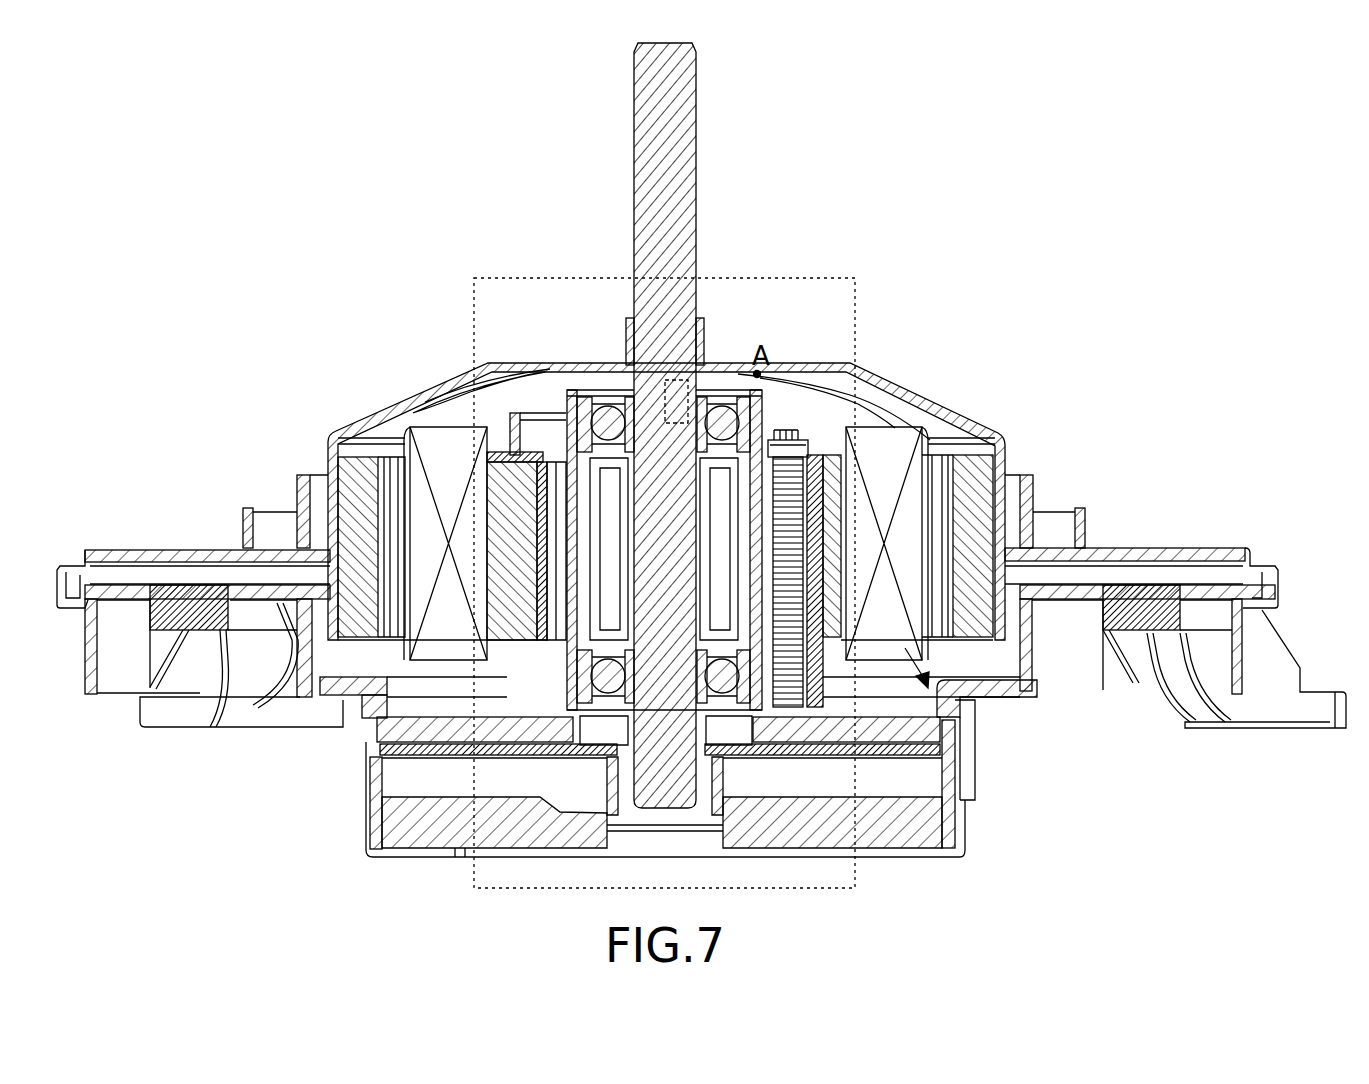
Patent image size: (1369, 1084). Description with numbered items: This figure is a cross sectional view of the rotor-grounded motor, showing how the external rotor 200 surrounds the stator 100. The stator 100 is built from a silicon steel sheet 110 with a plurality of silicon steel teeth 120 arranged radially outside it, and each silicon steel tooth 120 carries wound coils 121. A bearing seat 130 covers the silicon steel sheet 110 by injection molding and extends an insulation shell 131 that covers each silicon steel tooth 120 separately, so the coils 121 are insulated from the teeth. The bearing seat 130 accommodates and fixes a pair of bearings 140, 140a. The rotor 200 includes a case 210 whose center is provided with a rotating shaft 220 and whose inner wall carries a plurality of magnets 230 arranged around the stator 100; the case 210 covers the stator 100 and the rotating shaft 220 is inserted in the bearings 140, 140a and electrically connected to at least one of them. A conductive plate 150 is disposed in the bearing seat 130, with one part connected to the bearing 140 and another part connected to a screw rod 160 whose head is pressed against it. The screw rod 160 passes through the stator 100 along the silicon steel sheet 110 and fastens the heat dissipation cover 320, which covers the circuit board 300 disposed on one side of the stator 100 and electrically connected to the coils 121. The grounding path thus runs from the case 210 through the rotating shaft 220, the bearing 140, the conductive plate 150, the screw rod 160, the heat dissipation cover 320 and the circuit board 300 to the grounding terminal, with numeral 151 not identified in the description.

The stator 100 is at (950, 716).
The silicon steel sheet 110 is at (830, 510).
The silicon steel teeth 120 is at (934, 446).
The coils 121 is at (838, 425).
The bearing seat 130 is at (565, 398).
The insulation shell 131 is at (900, 428).
The bearing 140 is at (720, 415).
The bearing 140a is at (580, 670).
The conductive plate 150 is at (780, 470).
The rotor core top 151 is at (772, 450).
The screw rod 160 is at (1037, 525).
The rotor 200 is at (502, 364).
The case 210 is at (432, 402).
The rotating shaft 220 is at (640, 158).
The magnets 230 is at (793, 567).
The circuit board 300 is at (868, 760).
The heat dissipation cover 320 is at (905, 732).